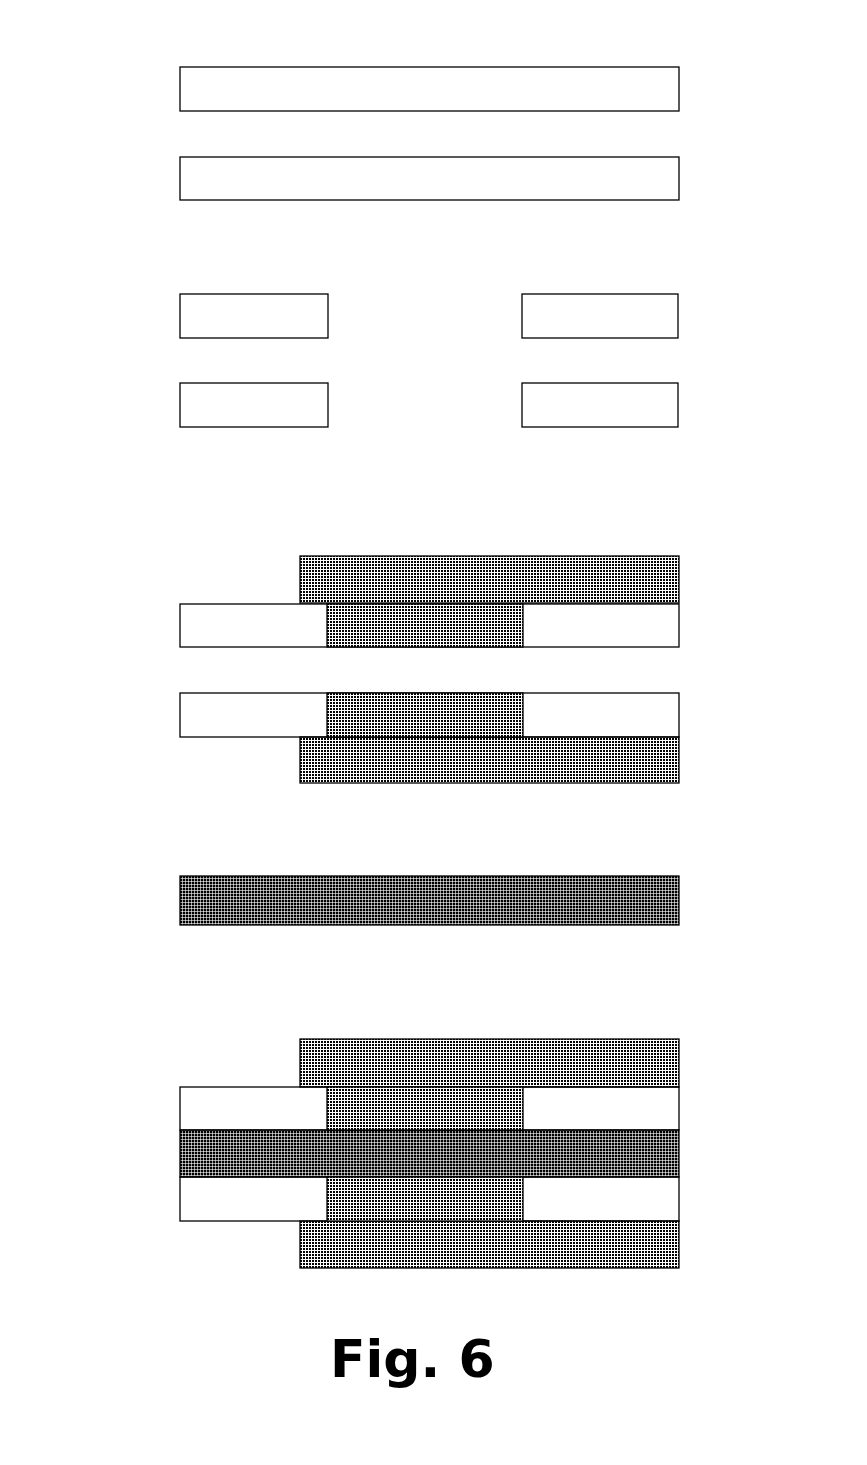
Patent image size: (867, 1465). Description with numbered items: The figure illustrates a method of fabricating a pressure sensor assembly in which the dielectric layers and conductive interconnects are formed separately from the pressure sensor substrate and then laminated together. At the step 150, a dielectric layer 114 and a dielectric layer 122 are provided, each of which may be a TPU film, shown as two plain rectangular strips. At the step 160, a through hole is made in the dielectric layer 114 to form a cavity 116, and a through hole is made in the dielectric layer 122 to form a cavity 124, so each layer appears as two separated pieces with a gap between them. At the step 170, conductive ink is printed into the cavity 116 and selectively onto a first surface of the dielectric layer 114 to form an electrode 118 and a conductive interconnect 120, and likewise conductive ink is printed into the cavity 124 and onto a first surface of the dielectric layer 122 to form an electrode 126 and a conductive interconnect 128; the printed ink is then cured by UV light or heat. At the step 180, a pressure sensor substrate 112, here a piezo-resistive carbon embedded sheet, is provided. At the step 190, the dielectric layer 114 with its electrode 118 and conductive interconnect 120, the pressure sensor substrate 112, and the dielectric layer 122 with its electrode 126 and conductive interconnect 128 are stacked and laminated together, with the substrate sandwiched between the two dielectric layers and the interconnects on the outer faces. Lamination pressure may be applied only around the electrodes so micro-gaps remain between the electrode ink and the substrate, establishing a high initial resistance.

The pressure sensor substrate 112 is at (188, 903).
The dielectric layer 114 is at (188, 86).
The cavity 116 is at (436, 305).
The electrode 118 is at (505, 621).
The conductive interconnect 120 is at (437, 562).
The dielectric layer 122 is at (188, 181).
The cavity 124 is at (395, 410).
The electrode 126 is at (505, 713).
The conductive interconnect 128 is at (395, 775).
The step 150 is at (141, 43).
The step 160 is at (141, 272).
The step 170 is at (141, 510).
The step 180 is at (141, 851).
The step 190 is at (141, 993).